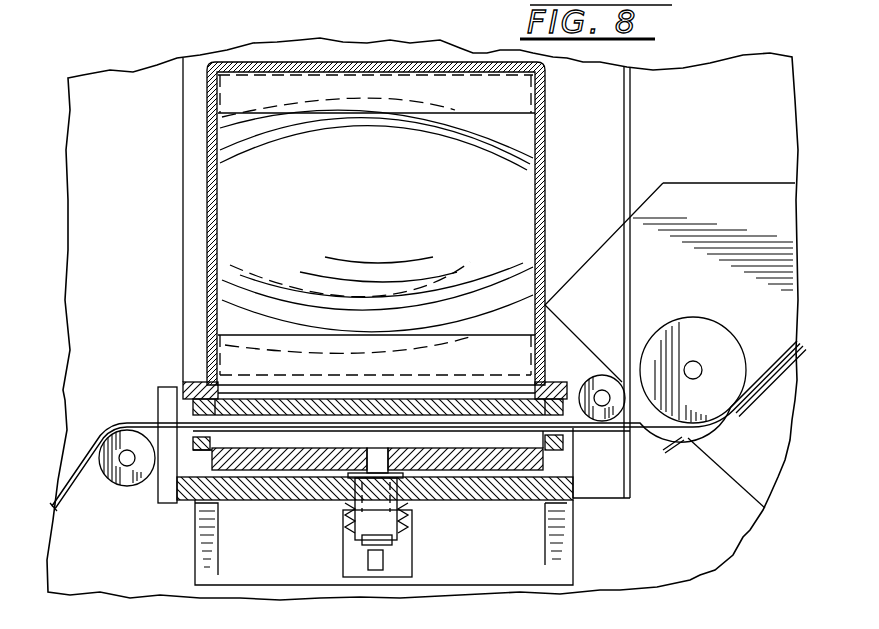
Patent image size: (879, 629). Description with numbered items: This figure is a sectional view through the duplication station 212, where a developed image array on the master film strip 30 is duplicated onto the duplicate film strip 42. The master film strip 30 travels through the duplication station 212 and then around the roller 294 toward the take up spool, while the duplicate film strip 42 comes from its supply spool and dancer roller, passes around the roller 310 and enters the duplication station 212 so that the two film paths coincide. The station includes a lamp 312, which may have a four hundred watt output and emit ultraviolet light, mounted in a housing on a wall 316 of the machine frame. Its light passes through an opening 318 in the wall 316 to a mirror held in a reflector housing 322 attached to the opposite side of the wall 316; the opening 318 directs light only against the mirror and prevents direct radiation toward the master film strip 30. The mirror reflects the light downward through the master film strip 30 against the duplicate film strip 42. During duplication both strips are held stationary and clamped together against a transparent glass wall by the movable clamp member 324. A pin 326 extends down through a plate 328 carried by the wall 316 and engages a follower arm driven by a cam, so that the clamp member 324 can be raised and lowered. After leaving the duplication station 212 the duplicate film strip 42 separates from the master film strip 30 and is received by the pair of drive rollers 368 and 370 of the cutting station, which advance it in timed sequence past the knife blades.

The duplication station 212 is at (135, 55).
The wall 316 is at (108, 240).
The reflector housing 322 is at (207, 155).
The lamp 312 is at (384, 232).
The opening 318 is at (400, 116).
The pin 326 is at (498, 405).
The clamp member 324 is at (447, 457).
The plate 328 is at (263, 496).
The roller 310 is at (138, 478).
The roller 294 is at (606, 386).
The drive roller 368 is at (712, 330).
The master film strip 30 is at (92, 443).
The duplicate film strip 42 is at (80, 483).
The drive roller 370 is at (757, 428).